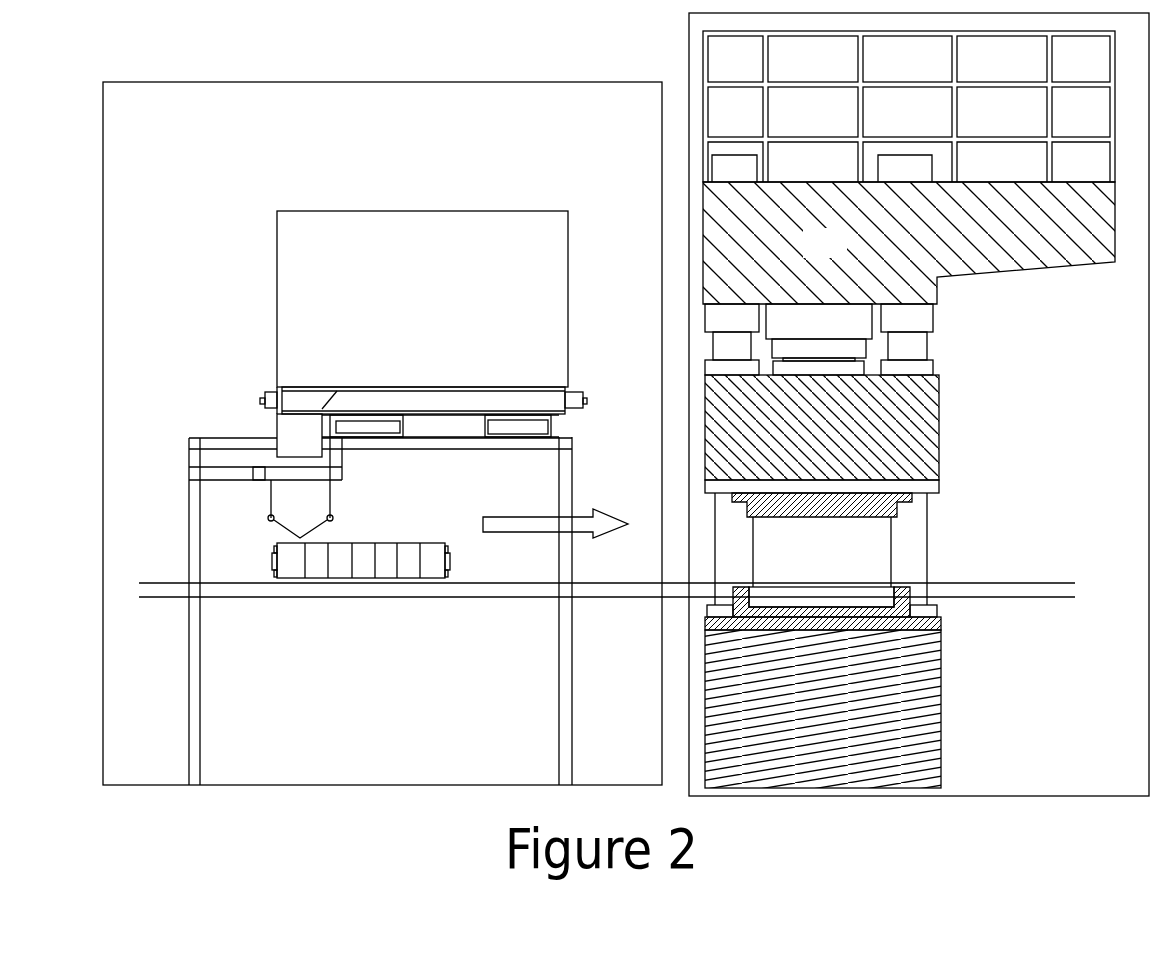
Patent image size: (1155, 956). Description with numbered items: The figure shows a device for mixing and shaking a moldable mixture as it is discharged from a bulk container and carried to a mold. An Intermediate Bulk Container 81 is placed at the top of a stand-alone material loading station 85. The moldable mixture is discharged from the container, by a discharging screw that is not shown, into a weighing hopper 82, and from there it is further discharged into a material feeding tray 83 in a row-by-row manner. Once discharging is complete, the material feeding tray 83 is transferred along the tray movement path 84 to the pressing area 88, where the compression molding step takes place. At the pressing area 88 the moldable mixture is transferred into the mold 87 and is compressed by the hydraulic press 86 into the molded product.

The Intermediate Bulk Container (IBC) 81 is at (422, 299).
The weighing hopper 82 is at (335, 490).
The material feeding tray 83 is at (277, 552).
The tray movement path 84 is at (555, 504).
The material loading station 85 is at (382, 418).
The hydraulic press 86 is at (909, 243).
The mold 87 is at (850, 591).
The pressing area 88 is at (823, 730).